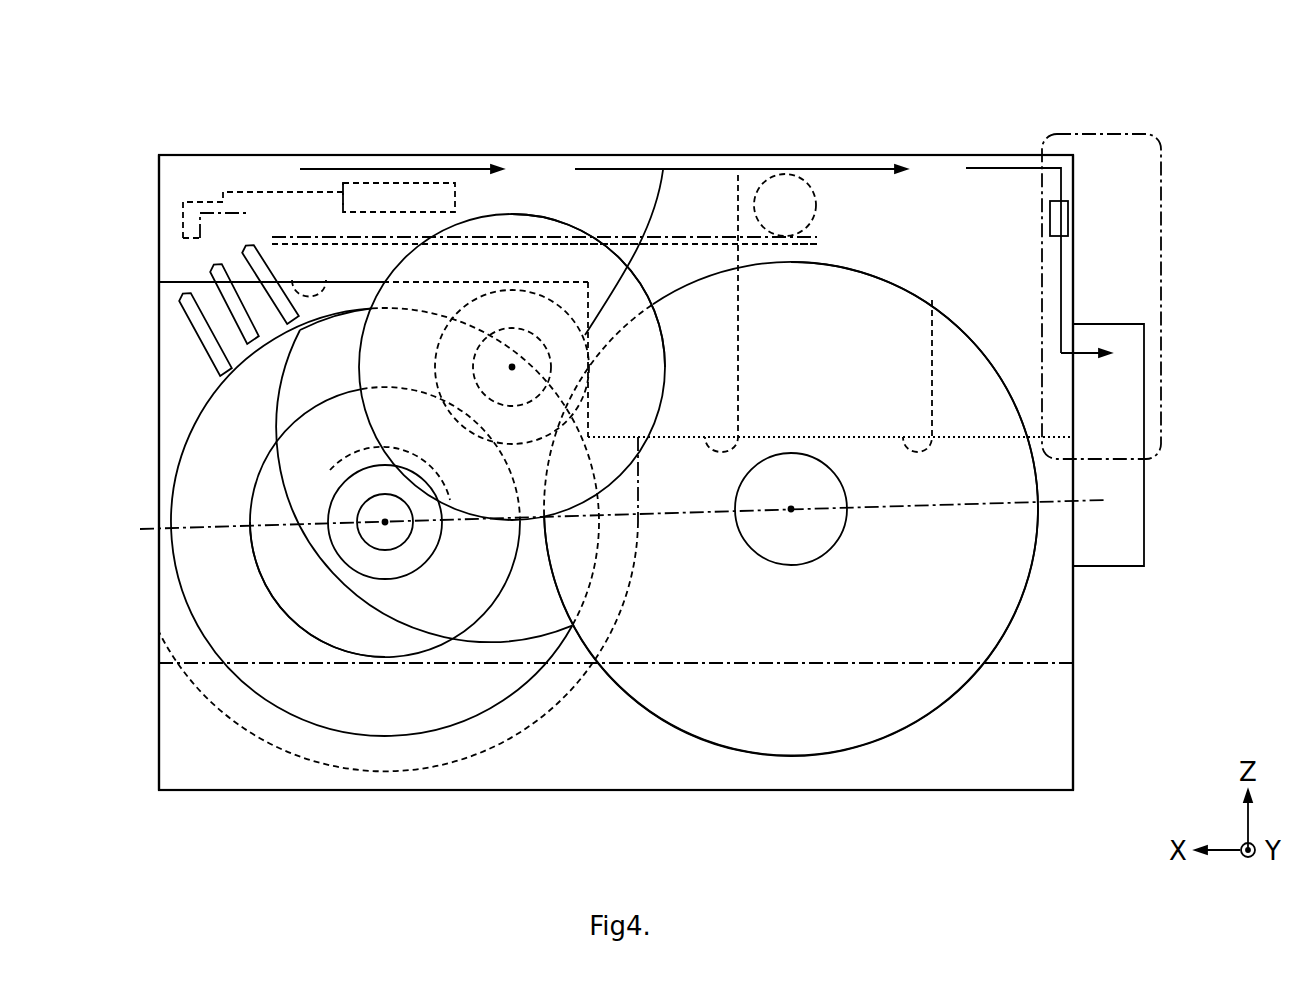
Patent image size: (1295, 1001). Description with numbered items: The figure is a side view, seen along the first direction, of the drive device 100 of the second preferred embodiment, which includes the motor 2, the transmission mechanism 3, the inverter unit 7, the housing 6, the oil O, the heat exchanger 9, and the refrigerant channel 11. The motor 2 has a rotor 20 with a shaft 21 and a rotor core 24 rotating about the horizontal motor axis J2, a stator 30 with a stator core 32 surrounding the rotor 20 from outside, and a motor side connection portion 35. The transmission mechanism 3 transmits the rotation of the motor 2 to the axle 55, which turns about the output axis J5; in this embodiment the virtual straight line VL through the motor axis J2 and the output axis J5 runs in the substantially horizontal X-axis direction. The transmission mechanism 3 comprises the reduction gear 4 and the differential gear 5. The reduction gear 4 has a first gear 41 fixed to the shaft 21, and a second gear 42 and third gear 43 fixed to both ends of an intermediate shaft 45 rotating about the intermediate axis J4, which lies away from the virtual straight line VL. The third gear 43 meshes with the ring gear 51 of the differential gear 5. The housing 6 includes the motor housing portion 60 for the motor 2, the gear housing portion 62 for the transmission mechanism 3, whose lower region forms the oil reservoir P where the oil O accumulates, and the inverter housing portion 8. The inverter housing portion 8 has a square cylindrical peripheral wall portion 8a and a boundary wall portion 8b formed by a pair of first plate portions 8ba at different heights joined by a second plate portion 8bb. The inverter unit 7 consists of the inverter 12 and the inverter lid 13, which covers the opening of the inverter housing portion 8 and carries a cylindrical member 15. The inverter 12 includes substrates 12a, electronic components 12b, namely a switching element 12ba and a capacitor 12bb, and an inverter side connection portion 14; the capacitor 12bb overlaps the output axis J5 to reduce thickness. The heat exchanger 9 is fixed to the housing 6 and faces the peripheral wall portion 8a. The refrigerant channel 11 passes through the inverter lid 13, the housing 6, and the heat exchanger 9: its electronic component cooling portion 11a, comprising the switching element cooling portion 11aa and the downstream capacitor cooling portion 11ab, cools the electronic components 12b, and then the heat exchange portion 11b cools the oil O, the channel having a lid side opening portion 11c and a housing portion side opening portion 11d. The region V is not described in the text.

The drive device 100 is at (1057, 108).
The motor 2 is at (160, 455).
The transmission mechanism 3 is at (913, 275).
The reduction gear 4 is at (538, 200).
The differential gear 5 is at (958, 710).
The housing 6 is at (1087, 296).
The inverter unit 7 is at (239, 140).
The inverter housing portion 8 is at (158, 265).
The peripheral wall portion 8a is at (158, 242).
The boundary wall portion 8b is at (738, 175).
The first plate portions 8ba is at (292, 280).
The second plate portion 8bb is at (632, 244).
The heat exchanger 9 is at (1145, 414).
The refrigerant channel 11 is at (1009, 148).
The electronic component cooling portion 11a is at (663, 170).
The switching element cooling portion 11aa is at (390, 169).
The capacitor cooling portion 11ab is at (872, 170).
The heat exchange portion 11b is at (1084, 357).
The lid side opening portion 11c is at (1062, 186).
The housing portion side opening portion 11d is at (1062, 258).
The inverter 12 is at (694, 218).
The substrate 12a is at (612, 237).
The electronic components 12b is at (415, 183).
The switching element 12ba is at (358, 183).
The capacitor 12bb is at (820, 237).
The inverter lid 13 is at (800, 193).
The inverter side connection portion 14 is at (200, 198).
The cylindrical member 15 is at (1084, 214).
The rotor 20 is at (283, 547).
The shaft 21 is at (355, 548).
The rotor core 24 is at (310, 637).
The stator 30 is at (190, 490).
The stator core 32 is at (214, 386).
The motor side connection portion 35 is at (186, 306).
The first gear 41 is at (345, 470).
The second gear 42 is at (642, 280).
The third gear 43 is at (528, 330).
The intermediate shaft 45 is at (488, 297).
The ring gear 51 is at (682, 730).
The axle 55 is at (828, 552).
The motor housing portion 60 is at (537, 752).
The gear housing portion 62 is at (1088, 700).
The motor axis J2 is at (385, 522).
The intermediate axis J4 is at (512, 367).
The output axis J5 is at (791, 509).
The oil O is at (1030, 663).
The oil reservoir P is at (1088, 746).
The ventilation region V is at (1176, 212).
The virtual straight line VL is at (1055, 496).